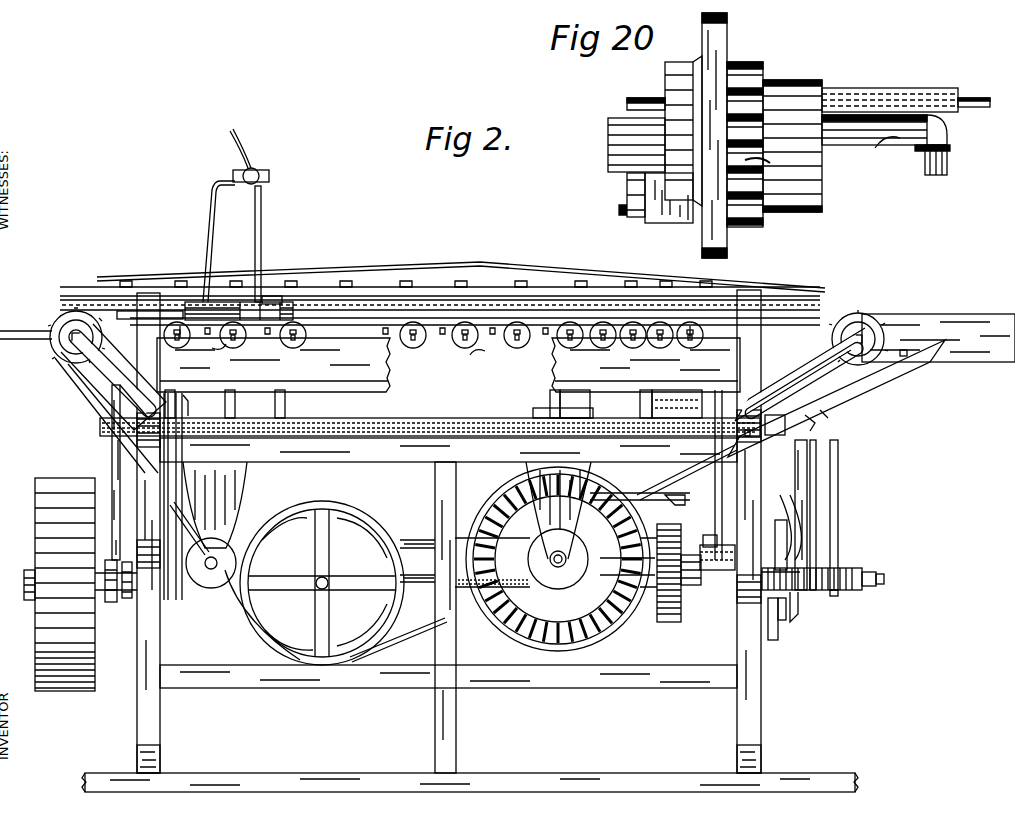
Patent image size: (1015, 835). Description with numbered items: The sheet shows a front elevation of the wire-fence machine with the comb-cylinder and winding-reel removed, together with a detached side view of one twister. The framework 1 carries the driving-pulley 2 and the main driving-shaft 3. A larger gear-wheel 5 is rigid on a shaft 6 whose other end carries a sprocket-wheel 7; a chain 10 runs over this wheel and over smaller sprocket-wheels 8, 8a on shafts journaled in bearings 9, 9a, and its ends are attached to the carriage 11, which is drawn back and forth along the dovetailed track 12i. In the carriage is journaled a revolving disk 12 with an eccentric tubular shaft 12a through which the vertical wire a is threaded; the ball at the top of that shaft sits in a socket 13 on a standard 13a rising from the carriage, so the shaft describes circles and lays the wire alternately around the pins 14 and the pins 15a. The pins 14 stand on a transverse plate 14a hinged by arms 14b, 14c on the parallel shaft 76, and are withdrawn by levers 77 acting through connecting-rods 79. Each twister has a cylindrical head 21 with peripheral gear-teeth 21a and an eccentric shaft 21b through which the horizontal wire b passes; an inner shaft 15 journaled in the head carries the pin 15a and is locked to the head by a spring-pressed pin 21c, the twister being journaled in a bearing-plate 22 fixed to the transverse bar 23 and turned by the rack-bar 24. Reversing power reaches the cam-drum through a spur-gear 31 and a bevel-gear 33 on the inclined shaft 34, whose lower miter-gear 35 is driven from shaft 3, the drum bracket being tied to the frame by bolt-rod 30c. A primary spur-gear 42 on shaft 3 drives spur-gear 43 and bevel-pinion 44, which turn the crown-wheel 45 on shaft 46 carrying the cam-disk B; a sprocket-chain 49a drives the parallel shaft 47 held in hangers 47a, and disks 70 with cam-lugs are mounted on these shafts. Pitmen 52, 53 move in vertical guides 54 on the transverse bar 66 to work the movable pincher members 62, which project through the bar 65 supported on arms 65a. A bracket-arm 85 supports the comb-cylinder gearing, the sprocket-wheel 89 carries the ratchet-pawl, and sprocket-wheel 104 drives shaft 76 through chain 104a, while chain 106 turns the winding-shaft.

In FIG. 2, the framework 1 is at (740, 675).
In FIG. 2, the driving-pulley 2 is at (519, 502).
In FIG. 2, the main driving-shaft 3 is at (726, 595).
In FIG. 2, the larger gear-wheel 5 is at (304, 547).
In FIG. 2, the shaft 6 is at (330, 583).
In FIG. 2, the sprocket-wheel 7 is at (363, 523).
In FIG. 2, the smaller sprocket-wheel 8 is at (76, 335).
In FIG. 2, the smaller sprocket-wheel 8a is at (858, 337).
In FIG. 2, the bearing 9 is at (113, 377).
In FIG. 2, the bearing 9a is at (800, 374).
In FIG. 2, the chain 10 is at (811, 302).
In FIG. 2, the slide or carriage 11 is at (239, 311).
In FIG. 2, the revolving disk 12 is at (262, 296).
In FIG. 2, the tubular shaft 12a is at (258, 214).
In FIG. 2, the dovetailed bearing or track 12i is at (443, 318).
In FIG. 2, the socket 13 is at (258, 166).
In FIG. 2, the standard or arm 13a is at (214, 226).
In FIG. 2, the pins 14 is at (578, 354).
In FIG. 2, the transverse bar or plate 14a is at (549, 392).
In FIG. 2, the arm 14b is at (295, 406).
In FIG. 2, the arm 14c is at (640, 406).
In FIG. 2, the shaft or inner member of twister 15 is at (226, 336).
In FIG. 20, the shaft or inner member of twister 15 is at (608, 147).
In FIG. 2, the pin 15a is at (232, 349).
In FIG. 20, the pin 15a is at (939, 176).
In FIG. 20, the twister / cylindrical head 21 is at (789, 76).
In FIG. 20, the peripheral gear-teeth 21a is at (627, 186).
In FIG. 20, the integral eccentric shaft 21b is at (894, 72).
In FIG. 20, the pin 21c is at (672, 222).
In FIG. 20, the bearing-plate 22 is at (726, 252).
In FIG. 2, the transverse bar 23 is at (521, 356).
In FIG. 2, the rack-bar 24 is at (18, 345).
In FIG. 2, the bolt-rod 30c is at (836, 398).
In FIG. 2, the spur-gear 31 is at (764, 400).
In FIG. 2, the bevel-gear 33 is at (838, 390).
In FIG. 2, the inclined shaft 34 is at (797, 448).
In FIG. 2, the larger miter-gear 35 is at (801, 516).
In FIG. 2, the primary spur-gear 42 is at (674, 620).
In FIG. 2, the spur-gear 43 is at (672, 526).
In FIG. 2, the bevel-pinion 44 is at (626, 558).
In FIG. 2, the crown-wheel 45 is at (601, 522).
In FIG. 2, the shaft 46 is at (564, 569).
In FIG. 2, the shaft 47 is at (243, 599).
In FIG. 2, the hangers 47a is at (242, 482).
In FIG. 2, the sprocket-chain 49a is at (416, 540).
In FIG. 2, the pitman 52 is at (232, 404).
In FIG. 2, the pitman 53 is at (575, 404).
In FIG. 2, the vertical guides 54 is at (540, 419).
In FIG. 2, the movable member of pinchers 62 is at (680, 349).
In FIG. 2, the transverse bar 65 is at (332, 369).
In FIG. 2, the arms 65a is at (712, 500).
In FIG. 2, the transverse bar 66 is at (430, 440).
In FIG. 2, the disk 70 is at (215, 590).
In FIG. 2, the parallel shaft 76 is at (436, 423).
In FIG. 2, the levers 77 is at (633, 493).
In FIG. 2, the connecting-rods 79 is at (447, 450).
In FIG. 2, the bracket-arm 85 is at (706, 533).
In FIG. 2, the sprocket-wheel 89 is at (775, 634).
In FIG. 2, the sprocket-wheel 104 is at (840, 596).
In FIG. 2, the chain 104a is at (838, 500).
In FIG. 2, the sprocket-chain 106 is at (114, 459).
In FIG. 2, the cam-disk B is at (502, 496).
In FIG. 20, the vertical wire a is at (891, 153).
In FIG. 20, the horizontal wire b is at (983, 108).